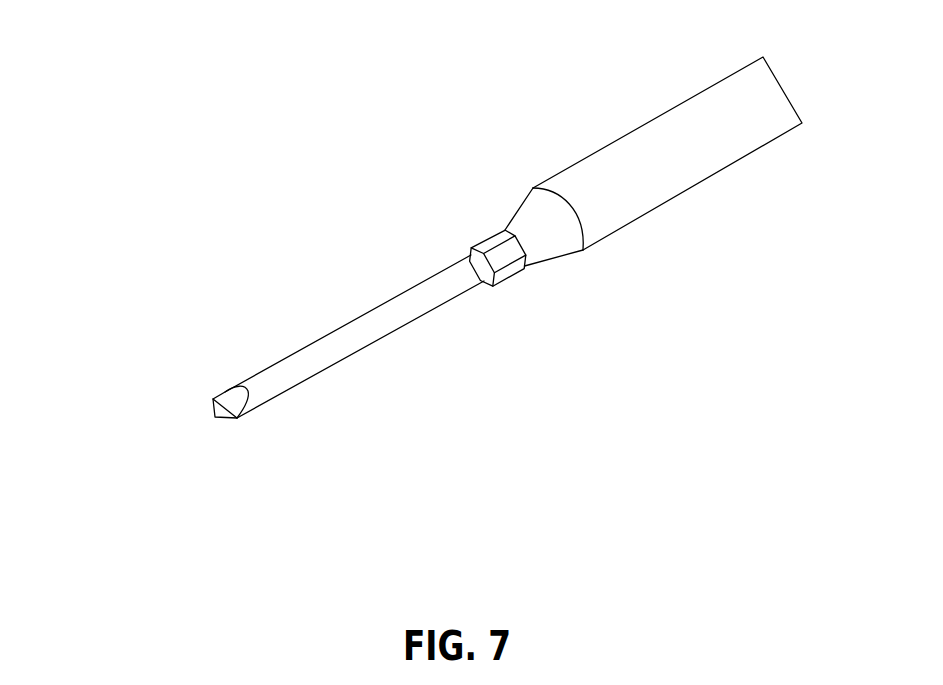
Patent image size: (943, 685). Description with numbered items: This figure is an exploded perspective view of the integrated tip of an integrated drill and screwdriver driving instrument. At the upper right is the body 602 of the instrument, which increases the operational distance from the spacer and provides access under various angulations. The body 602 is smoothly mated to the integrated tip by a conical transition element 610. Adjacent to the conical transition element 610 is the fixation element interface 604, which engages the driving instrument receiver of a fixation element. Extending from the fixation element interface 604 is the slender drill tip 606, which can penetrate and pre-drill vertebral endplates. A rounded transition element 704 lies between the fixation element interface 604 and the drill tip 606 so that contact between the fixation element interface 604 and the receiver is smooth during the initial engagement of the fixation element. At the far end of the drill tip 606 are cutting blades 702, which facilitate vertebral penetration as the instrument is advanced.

The body 602 is at (665, 168).
The conical transition element 610 is at (537, 218).
The fixation element interface 604 is at (497, 245).
The rounded transition element 704 is at (485, 263).
The drill tip 606 is at (352, 333).
The cutting blades 702 is at (225, 402).